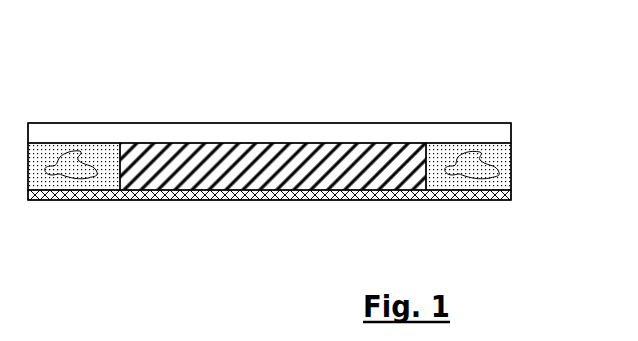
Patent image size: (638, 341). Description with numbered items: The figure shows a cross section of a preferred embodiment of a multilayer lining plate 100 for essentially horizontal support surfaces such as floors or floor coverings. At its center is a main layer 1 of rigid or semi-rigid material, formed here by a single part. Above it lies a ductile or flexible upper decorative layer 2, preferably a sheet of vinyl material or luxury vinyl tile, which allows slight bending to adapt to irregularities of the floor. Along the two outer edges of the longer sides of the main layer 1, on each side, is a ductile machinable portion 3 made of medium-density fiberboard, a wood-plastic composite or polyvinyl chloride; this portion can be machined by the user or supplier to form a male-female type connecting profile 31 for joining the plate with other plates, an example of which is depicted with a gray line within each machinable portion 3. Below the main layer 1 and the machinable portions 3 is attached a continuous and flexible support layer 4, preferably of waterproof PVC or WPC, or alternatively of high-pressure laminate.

The multilayer lining plate 100 is at (523, 69).
The main layer 1 is at (177, 163).
The upper decorative layer 2 is at (254, 140).
The ductile machinable portion 3 is at (38, 181).
The connecting profile 31 is at (60, 158).
The support layer 4 is at (386, 195).